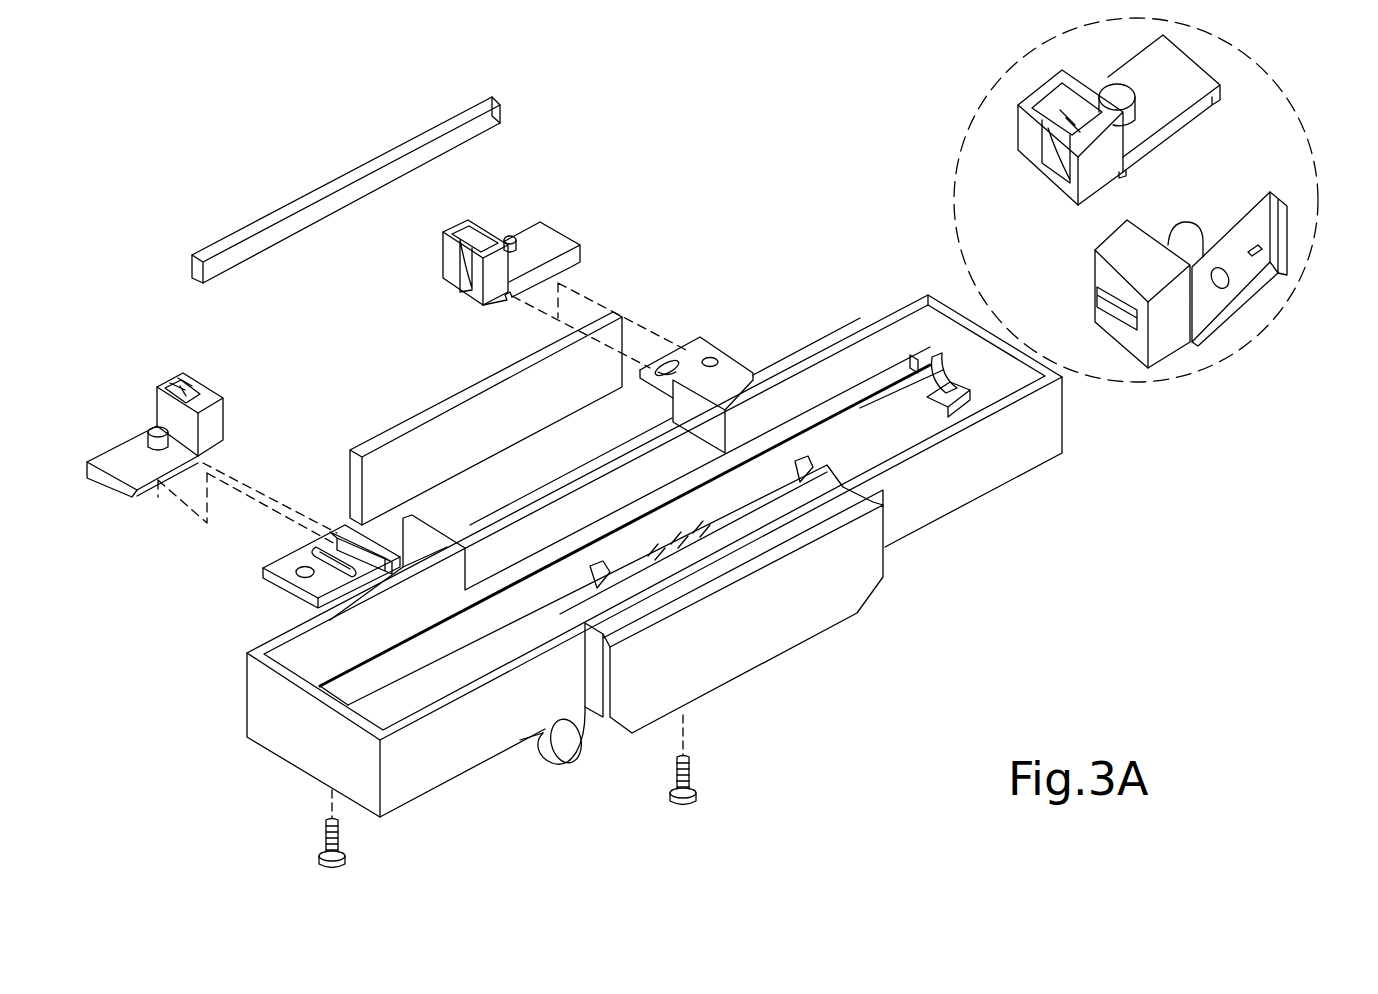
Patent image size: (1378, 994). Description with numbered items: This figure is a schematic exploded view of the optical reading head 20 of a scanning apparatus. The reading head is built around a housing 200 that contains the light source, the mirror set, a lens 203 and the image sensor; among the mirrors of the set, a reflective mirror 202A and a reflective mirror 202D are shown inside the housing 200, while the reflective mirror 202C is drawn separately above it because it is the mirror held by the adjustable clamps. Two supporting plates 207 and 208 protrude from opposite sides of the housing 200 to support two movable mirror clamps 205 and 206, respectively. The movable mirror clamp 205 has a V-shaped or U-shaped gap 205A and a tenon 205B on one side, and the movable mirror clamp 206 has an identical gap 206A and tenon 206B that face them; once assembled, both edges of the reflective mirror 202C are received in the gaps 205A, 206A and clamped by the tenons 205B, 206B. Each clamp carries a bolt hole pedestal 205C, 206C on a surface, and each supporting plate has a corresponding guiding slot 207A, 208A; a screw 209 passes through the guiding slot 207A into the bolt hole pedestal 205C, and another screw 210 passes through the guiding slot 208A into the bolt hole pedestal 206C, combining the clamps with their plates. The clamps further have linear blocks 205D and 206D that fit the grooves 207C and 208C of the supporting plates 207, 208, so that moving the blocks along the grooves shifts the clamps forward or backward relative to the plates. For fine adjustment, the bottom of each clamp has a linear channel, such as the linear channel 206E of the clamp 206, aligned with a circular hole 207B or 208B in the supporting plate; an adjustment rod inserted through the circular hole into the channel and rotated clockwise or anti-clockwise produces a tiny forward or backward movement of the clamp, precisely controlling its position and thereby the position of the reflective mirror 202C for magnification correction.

The optical reading head 20 is at (721, 157).
The housing 200 is at (1013, 458).
The reflective mirror 202A is at (855, 415).
The reflective mirror 202C is at (268, 217).
The reflective mirror 202D is at (663, 590).
The lens 203 is at (680, 540).
The movable mirror clamp 205 is at (217, 435).
The gap 205A is at (200, 388).
The tenon 205B is at (177, 378).
The bolt hole pedestal 205C is at (157, 422).
The linear block 205D is at (200, 462).
The movable mirror clamp 206 is at (472, 218).
The gap 206A is at (458, 250).
The tenon 206B is at (483, 238).
The bolt hole pedestal 206C is at (552, 227).
The linear block 206D is at (507, 297).
The linear channel 206E is at (1257, 252).
The supporting plate 207 is at (283, 578).
The guiding slot 207A is at (330, 553).
The circular hole 207B is at (300, 568).
The groove 207C is at (333, 533).
The supporting plate 208 is at (728, 368).
The guiding slot 208A is at (675, 360).
The circular hole 208B is at (712, 356).
The groove 208C is at (648, 387).
The screw 209 is at (322, 847).
The screw 210 is at (700, 775).